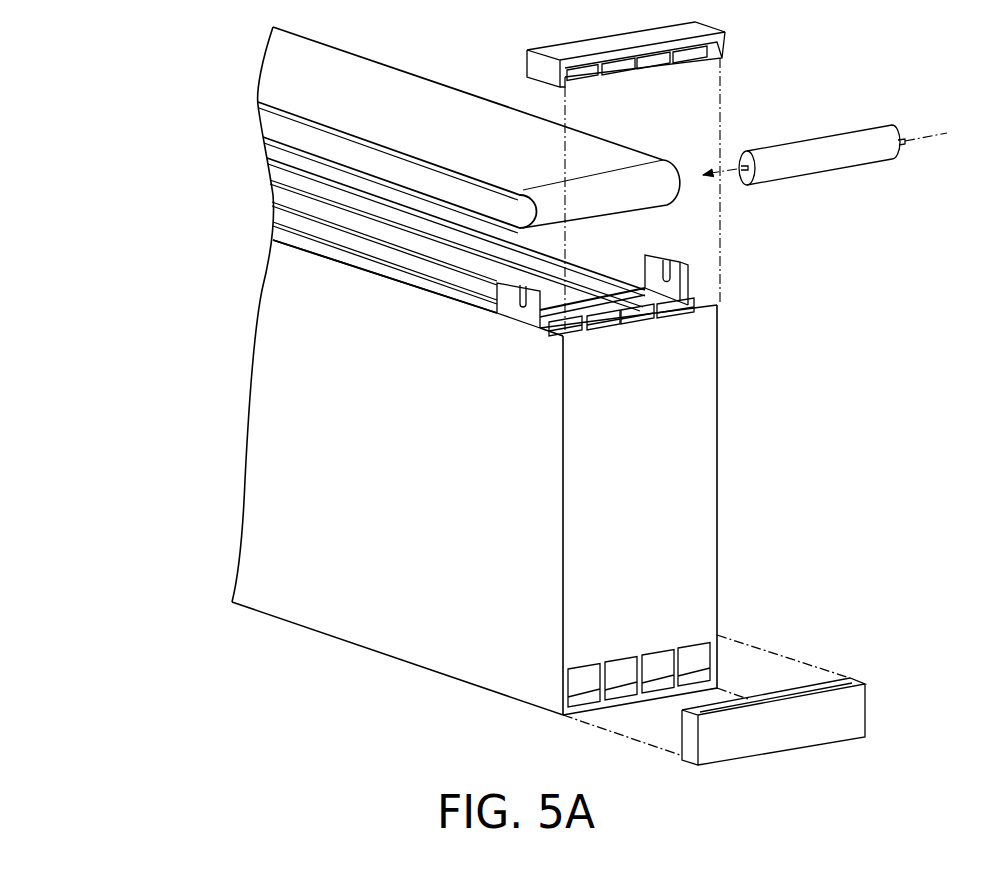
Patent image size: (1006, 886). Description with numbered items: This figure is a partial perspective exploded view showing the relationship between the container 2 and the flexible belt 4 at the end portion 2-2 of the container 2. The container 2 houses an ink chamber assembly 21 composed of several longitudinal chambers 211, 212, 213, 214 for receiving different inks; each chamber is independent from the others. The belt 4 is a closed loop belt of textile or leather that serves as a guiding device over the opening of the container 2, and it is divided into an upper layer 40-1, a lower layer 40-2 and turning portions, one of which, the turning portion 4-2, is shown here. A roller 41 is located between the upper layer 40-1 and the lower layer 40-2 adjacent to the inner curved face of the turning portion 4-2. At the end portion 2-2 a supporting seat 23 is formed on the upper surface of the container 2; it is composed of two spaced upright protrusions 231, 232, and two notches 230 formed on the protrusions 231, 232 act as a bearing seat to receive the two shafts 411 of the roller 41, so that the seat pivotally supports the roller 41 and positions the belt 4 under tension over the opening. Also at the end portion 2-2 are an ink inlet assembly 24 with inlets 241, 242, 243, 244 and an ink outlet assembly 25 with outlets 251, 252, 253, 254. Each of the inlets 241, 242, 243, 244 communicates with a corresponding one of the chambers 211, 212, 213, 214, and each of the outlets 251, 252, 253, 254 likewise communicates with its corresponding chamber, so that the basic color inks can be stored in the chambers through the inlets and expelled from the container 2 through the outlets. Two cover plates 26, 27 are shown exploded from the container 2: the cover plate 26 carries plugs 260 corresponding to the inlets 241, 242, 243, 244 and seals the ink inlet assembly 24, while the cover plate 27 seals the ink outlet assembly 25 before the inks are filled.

The container 2 is at (308, 628).
The end portion of the container 2-2 is at (644, 466).
The flexible belt 4 is at (478, 95).
The upper layer 40-1 is at (513, 137).
The lower layer 40-2 is at (410, 172).
The turning portion 4-2 is at (603, 215).
The ink chamber assembly 21 is at (116, 100).
The chamber 211 is at (282, 232).
The chamber 212 is at (282, 212).
The chamber 213 is at (280, 190).
The chamber 214 is at (277, 171).
The supporting seat 23 is at (810, 250).
The notch 230 is at (518, 305).
The protrusion 231 is at (688, 298).
The protrusion 232 is at (688, 283).
The ink inlet assembly 24 is at (808, 323).
The inlet 241 is at (590, 335).
The inlet 242 is at (628, 327).
The inlet 243 is at (663, 322).
The inlet 244 is at (703, 313).
The ink outlet assembly 25 is at (452, 490).
The outlet 251 is at (585, 675).
The outlet 252 is at (622, 668).
The outlet 253 is at (658, 665).
The outlet 254 is at (695, 657).
The cover plate 26 is at (730, 44).
The plug 260 is at (585, 73).
The cover plate 27 is at (870, 710).
The roller 41 is at (848, 167).
The shaft 411 is at (740, 153).